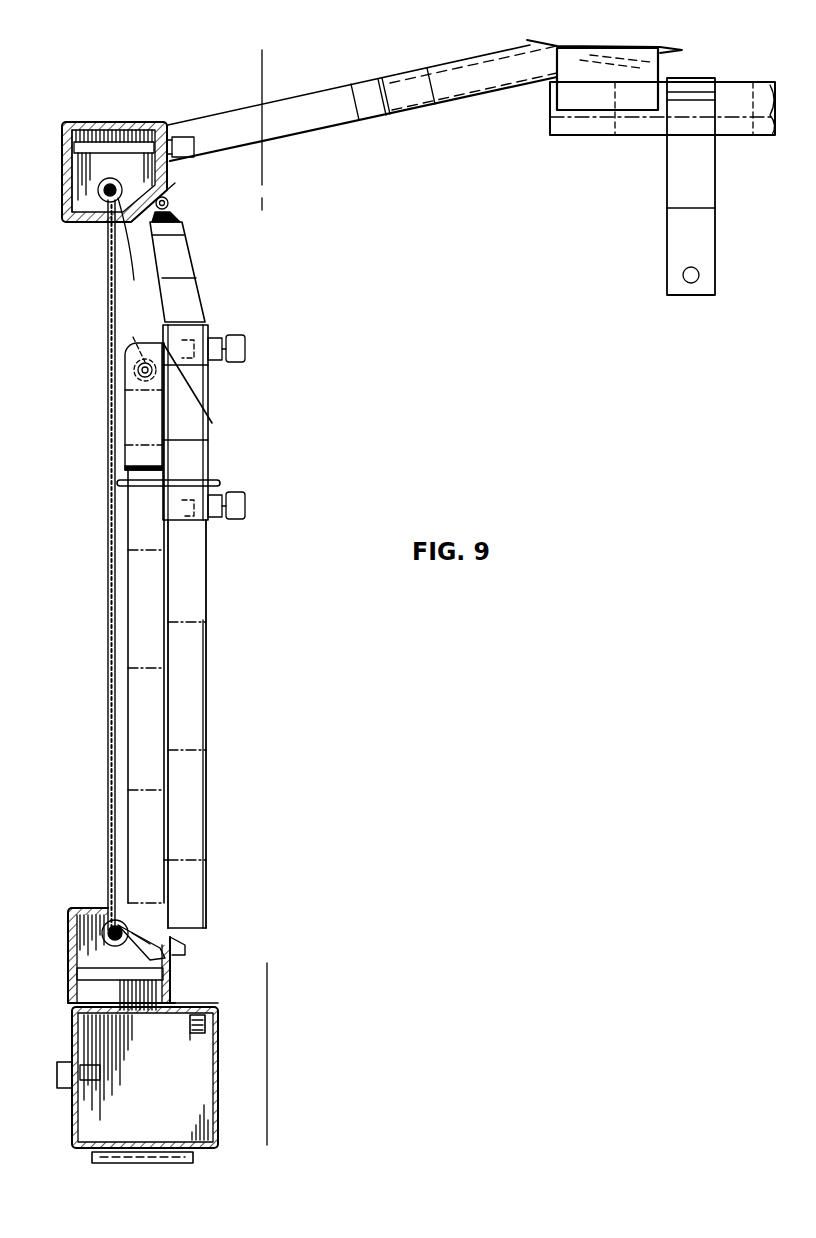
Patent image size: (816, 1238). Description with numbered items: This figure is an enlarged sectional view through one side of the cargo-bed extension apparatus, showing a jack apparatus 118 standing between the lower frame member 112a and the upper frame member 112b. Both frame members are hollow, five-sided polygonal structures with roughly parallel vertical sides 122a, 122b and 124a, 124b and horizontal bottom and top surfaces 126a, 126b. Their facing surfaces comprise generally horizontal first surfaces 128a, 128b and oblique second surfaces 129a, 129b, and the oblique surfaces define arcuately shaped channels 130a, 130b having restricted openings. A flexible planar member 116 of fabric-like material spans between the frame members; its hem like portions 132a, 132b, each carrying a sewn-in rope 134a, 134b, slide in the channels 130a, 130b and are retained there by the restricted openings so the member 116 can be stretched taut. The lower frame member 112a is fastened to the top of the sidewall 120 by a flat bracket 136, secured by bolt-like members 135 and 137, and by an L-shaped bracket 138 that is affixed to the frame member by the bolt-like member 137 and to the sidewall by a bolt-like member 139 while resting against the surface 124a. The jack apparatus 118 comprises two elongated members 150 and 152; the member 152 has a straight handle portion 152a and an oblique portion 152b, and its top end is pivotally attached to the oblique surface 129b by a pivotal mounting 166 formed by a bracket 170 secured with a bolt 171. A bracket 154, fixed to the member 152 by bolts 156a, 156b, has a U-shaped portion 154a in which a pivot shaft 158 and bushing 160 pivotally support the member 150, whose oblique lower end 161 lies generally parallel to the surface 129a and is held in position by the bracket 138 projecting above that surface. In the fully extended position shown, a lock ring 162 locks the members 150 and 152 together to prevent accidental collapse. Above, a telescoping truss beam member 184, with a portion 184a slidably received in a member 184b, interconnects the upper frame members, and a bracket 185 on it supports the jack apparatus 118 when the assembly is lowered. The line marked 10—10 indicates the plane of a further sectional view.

The section line 10- 10 is at (264, 66).
The lower frame member 112a is at (68, 980).
The upper frame member 112b is at (118, 118).
The flexible planar member 116 is at (108, 720).
The jack apparatus 118 is at (275, 604).
The sidewall 120 is at (72, 1113).
The vertical side 122a is at (70, 918).
The vertical side 122b is at (64, 193).
The vertical side 124a is at (178, 950).
The vertical side 124b is at (160, 168).
The horizontal bottom surface 126a is at (74, 1002).
The horizontal top surface 126b is at (70, 125).
The first surface 128a is at (74, 908).
The first surface 128b is at (82, 222).
The oblique second surface 129a is at (175, 936).
The oblique second surface 129b is at (177, 200).
The arcuately shaped channel 130a is at (158, 948).
The arcuately shaped channel 130b is at (100, 191).
The hem like portion 132a is at (102, 935).
The hem like portion 132b is at (106, 198).
The rope 134a is at (114, 920).
The rope 134b is at (123, 205).
The bolt-like member 135 is at (60, 1062).
The bracket 136 is at (70, 1030).
The bolt-like member 137 is at (72, 975).
The L-shaped bracket 138 is at (205, 1004).
The bolt-like member 139 is at (190, 1035).
The elongated member 150 is at (141, 610).
The elongated member 152 is at (209, 636).
The first relatively straight portion 152a is at (207, 712).
The second relatively straight portion 152b is at (191, 298).
The bracket 154 is at (208, 460).
The U-shaped portion 154a is at (137, 417).
The bolt 156a is at (246, 508).
The bolt 156b is at (246, 350).
The pivot shaft 158 is at (134, 370).
The bushing 160 is at (131, 331).
The lower end 161 is at (130, 928).
The lock ring 162 is at (214, 423).
The pivotal mounting 166 is at (180, 210).
The bracket 170 is at (176, 184).
The bolt 171 is at (188, 138).
The truss beam member 184 is at (500, 98).
The telescoping portion 184a is at (373, 108).
The telescoping member 184b is at (495, 44).
The bracket 185 is at (670, 206).